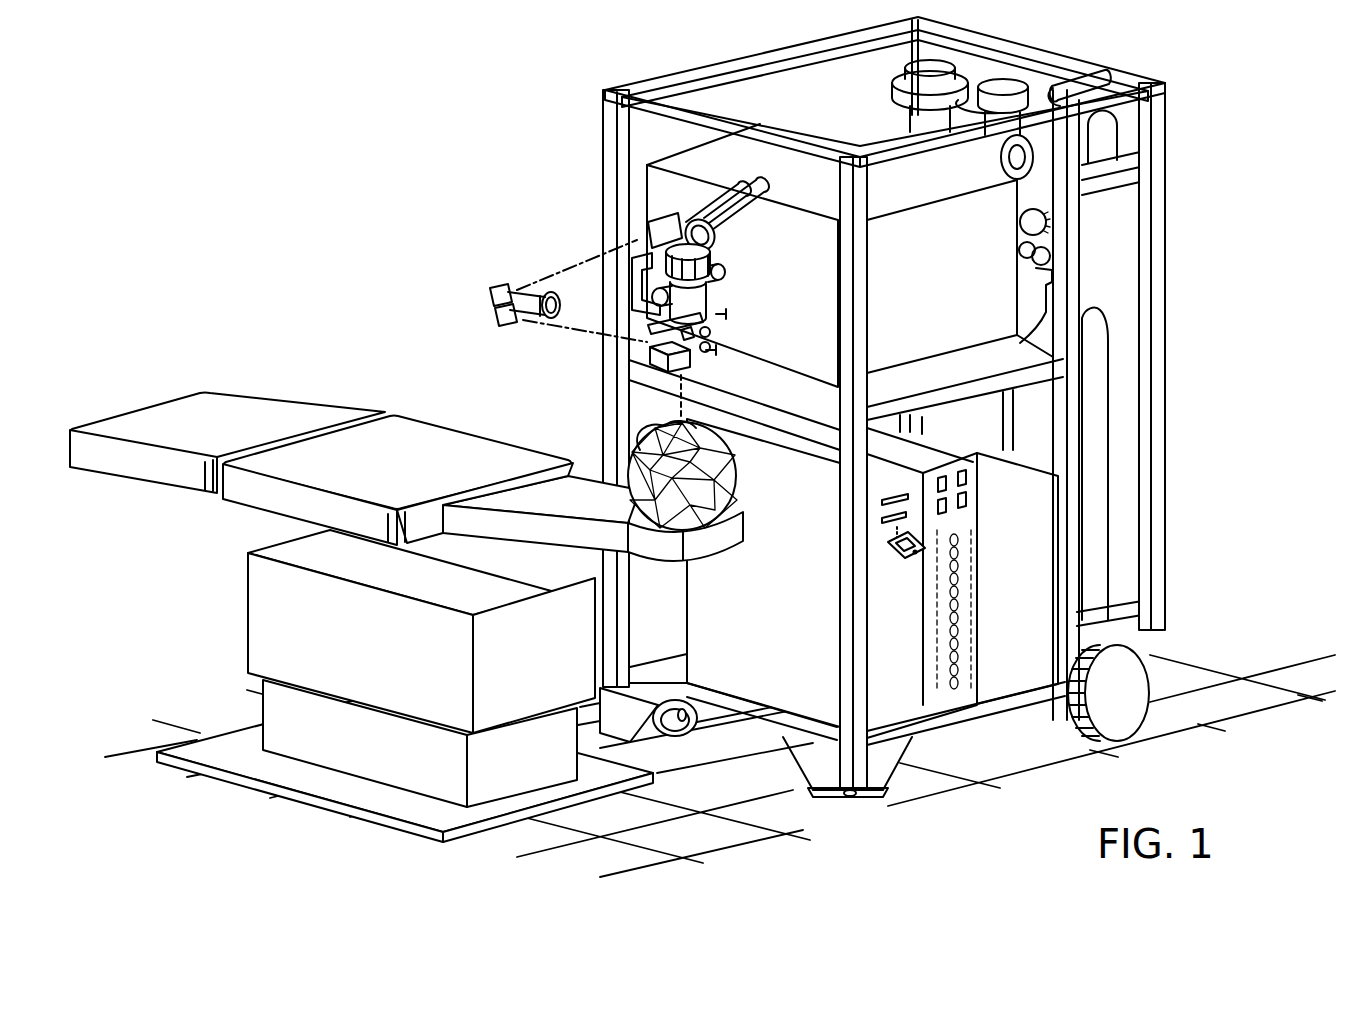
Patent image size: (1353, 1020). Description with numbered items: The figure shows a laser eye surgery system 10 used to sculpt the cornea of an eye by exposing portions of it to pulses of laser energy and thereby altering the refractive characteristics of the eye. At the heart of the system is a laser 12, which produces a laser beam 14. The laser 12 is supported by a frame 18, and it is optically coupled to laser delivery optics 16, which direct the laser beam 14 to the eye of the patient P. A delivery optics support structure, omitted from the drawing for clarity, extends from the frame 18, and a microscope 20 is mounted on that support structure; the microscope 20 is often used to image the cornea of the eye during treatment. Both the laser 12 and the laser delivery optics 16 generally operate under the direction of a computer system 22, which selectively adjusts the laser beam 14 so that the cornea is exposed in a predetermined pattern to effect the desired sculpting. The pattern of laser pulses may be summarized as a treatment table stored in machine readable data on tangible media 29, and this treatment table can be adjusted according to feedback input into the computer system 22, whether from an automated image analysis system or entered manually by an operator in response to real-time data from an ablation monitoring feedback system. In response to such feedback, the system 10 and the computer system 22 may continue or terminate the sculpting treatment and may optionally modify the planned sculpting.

The laser eye surgery system 10 is at (266, 116).
The laser 12 is at (1192, 219).
The laser beam 14 is at (577, 257).
The laser delivery optics 16 is at (642, 345).
The frame 18 is at (736, 75).
The microscope 20 is at (708, 248).
The computer system 22 is at (980, 738).
The tangible media 29 is at (890, 556).
The patient P is at (738, 478).